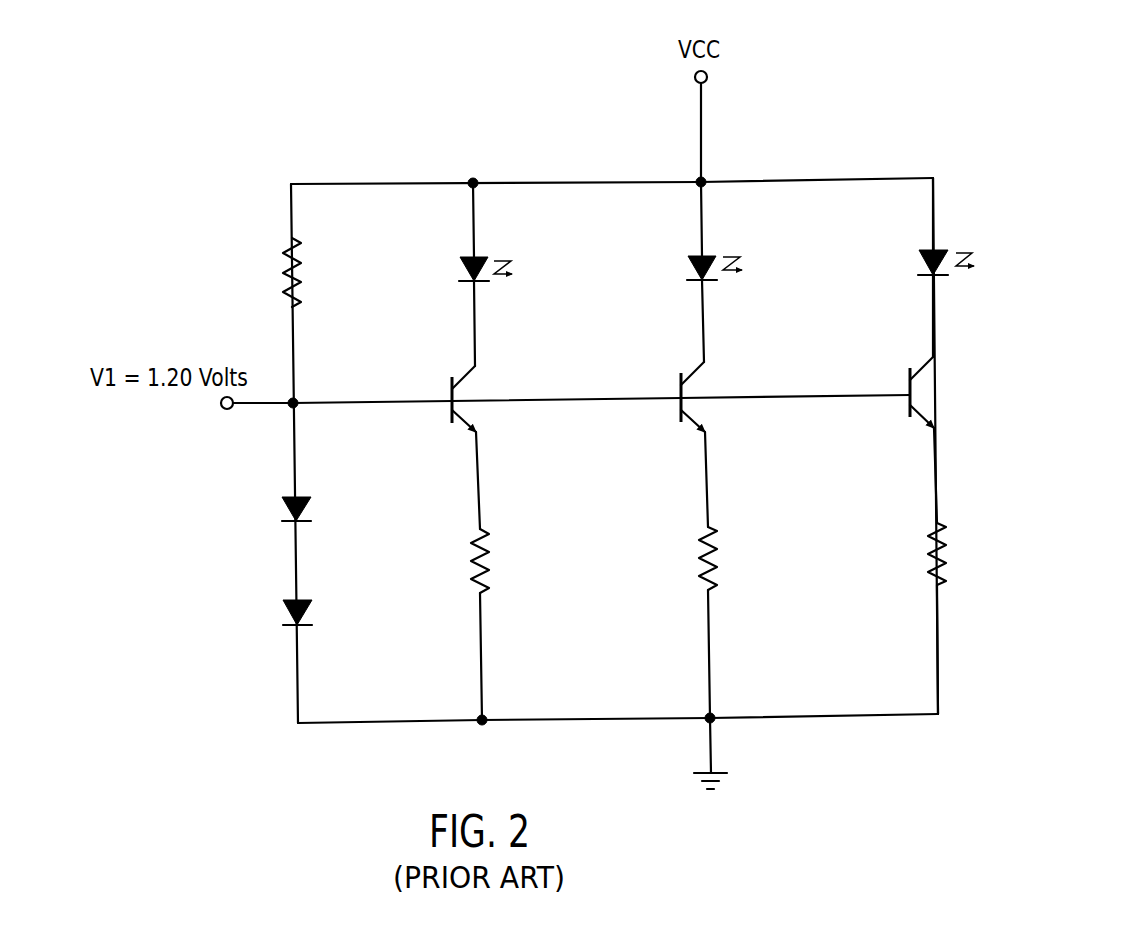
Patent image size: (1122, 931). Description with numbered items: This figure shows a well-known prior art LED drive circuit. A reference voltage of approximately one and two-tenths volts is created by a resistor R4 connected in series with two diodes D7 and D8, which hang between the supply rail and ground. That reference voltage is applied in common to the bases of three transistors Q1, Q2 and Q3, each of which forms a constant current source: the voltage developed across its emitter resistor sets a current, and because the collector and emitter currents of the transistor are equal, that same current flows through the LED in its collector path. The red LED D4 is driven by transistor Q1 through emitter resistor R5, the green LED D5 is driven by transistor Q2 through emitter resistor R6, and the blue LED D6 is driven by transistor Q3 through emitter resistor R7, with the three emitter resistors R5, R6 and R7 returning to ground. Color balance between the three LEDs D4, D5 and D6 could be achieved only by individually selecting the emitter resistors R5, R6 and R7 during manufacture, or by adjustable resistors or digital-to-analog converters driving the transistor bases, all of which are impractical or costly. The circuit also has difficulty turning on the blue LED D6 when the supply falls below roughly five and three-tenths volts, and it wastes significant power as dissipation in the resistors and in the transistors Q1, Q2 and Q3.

The resistor R4 is at (288, 273).
The diode D7 is at (282, 508).
The diode D8 is at (283, 611).
The red LED D4 is at (482, 258).
The green LED D5 is at (712, 252).
The blue LED D6 is at (945, 250).
The transistor Q1 is at (452, 389).
The transistor Q2 is at (681, 385).
The transistor Q3 is at (910, 380).
The emitter resistor R5 is at (490, 549).
The emitter resistor R6 is at (718, 546).
The emitter resistor R7 is at (945, 548).